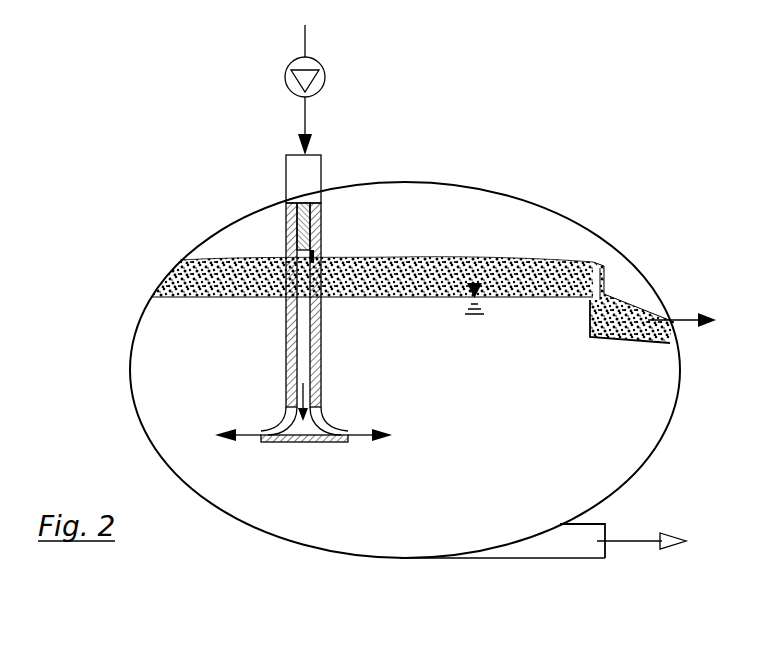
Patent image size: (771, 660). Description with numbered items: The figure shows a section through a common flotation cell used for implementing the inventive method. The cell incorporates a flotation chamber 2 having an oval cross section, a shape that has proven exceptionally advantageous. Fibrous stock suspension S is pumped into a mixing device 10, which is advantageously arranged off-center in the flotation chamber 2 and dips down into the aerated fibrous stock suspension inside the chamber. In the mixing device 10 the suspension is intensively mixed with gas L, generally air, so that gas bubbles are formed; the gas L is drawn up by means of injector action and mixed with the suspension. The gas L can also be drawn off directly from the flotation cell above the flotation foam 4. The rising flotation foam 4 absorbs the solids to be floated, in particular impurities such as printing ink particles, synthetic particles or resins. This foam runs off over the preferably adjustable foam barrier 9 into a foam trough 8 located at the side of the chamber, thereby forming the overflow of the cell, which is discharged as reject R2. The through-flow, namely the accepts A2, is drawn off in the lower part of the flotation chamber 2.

The flotation chamber 2 is at (165, 390).
The flotation foam 4 is at (185, 268).
The foam trough 8 is at (630, 346).
The foam barrier 9 is at (603, 292).
The mixing device 10 is at (324, 182).
The fibrous stock suspension S is at (300, 133).
The gas L is at (326, 250).
The reject R2 is at (668, 316).
The accepts A2 is at (672, 538).